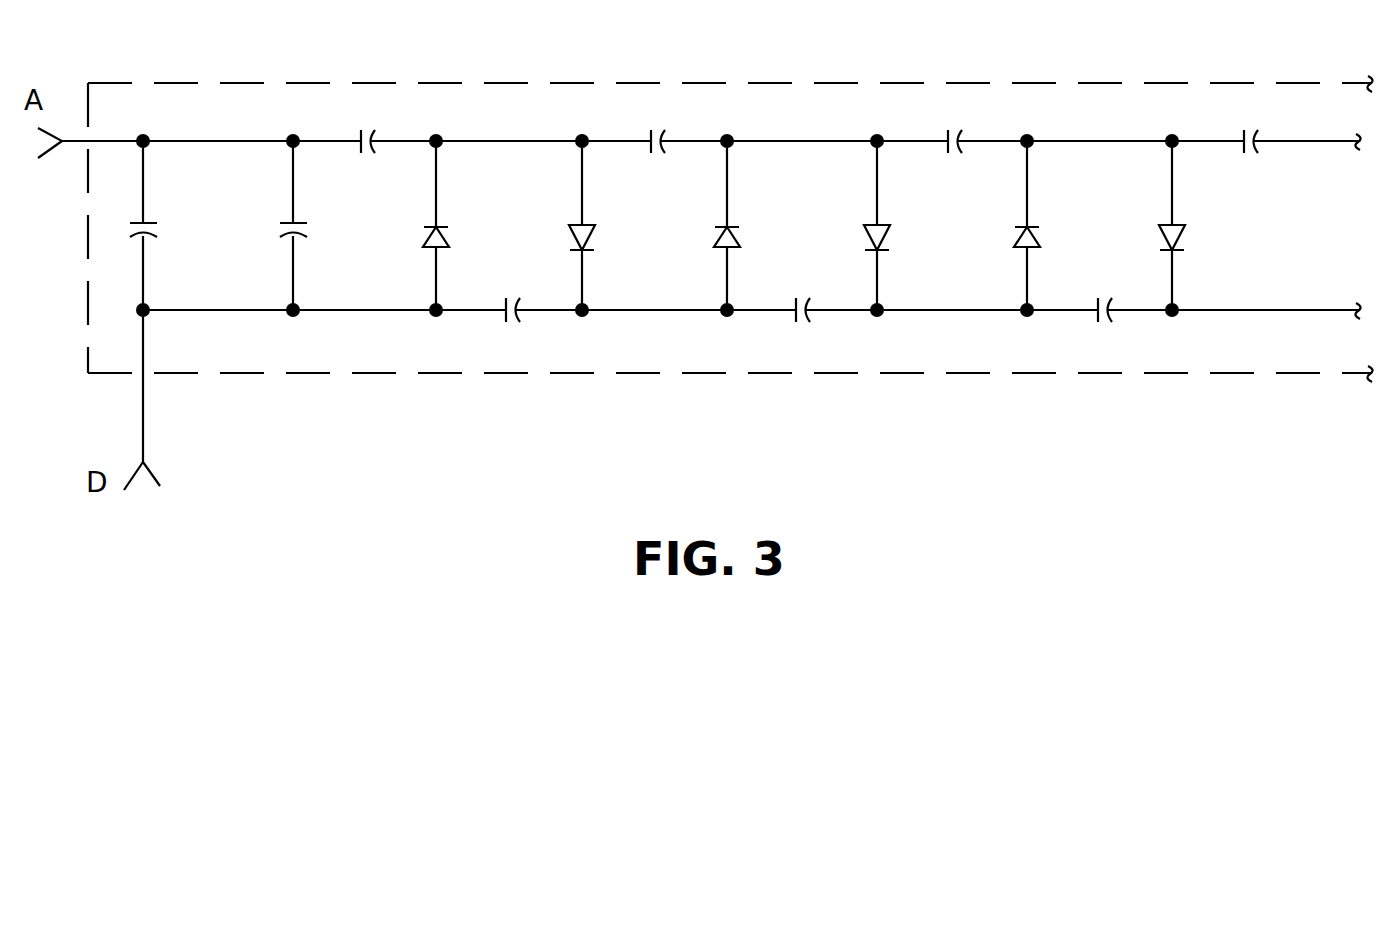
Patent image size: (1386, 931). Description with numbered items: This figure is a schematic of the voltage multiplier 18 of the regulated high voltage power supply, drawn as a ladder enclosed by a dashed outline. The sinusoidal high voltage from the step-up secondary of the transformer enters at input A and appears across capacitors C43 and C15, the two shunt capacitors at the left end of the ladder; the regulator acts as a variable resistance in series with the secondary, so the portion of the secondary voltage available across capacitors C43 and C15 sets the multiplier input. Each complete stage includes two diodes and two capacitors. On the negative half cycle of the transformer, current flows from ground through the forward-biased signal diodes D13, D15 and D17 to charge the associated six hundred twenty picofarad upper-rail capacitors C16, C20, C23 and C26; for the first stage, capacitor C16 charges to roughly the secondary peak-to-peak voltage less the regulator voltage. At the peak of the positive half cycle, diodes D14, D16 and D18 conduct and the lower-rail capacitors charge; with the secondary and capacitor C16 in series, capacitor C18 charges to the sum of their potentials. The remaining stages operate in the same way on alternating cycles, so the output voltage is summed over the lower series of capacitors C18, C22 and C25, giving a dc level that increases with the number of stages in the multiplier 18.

The voltage multiplier 18 is at (1220, 83).
The capacitor C43 is at (181, 225).
The capacitor C15 is at (330, 225).
The capacitor C16 is at (409, 121).
The capacitor C18 is at (541, 330).
The capacitor C20 is at (703, 120).
The capacitor C22 is at (835, 330).
The capacitor C23 is at (1003, 120).
The capacitor C25 is at (1137, 330).
The capacitor C26 is at (1299, 120).
The diode D13 is at (483, 225).
The diode D14 is at (629, 225).
The diode D15 is at (774, 225).
The diode D16 is at (924, 225).
The diode D17 is at (1073, 225).
The diode D18 is at (1219, 225).